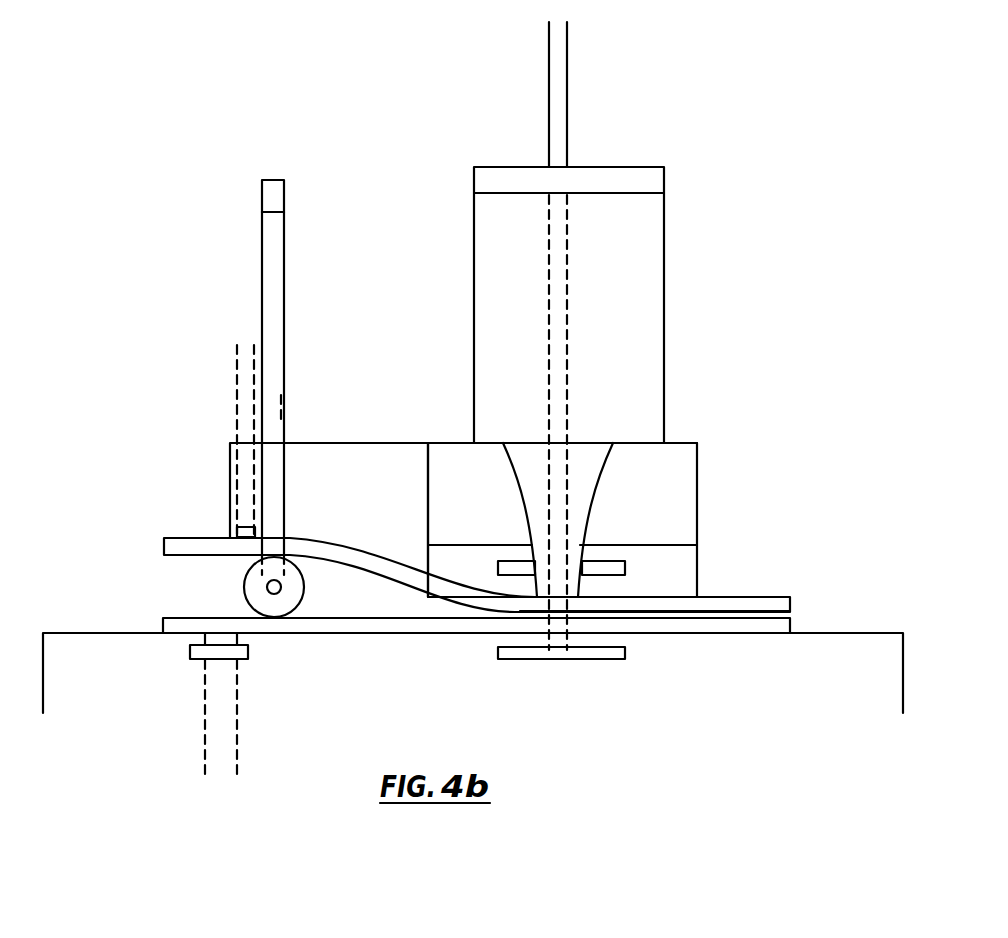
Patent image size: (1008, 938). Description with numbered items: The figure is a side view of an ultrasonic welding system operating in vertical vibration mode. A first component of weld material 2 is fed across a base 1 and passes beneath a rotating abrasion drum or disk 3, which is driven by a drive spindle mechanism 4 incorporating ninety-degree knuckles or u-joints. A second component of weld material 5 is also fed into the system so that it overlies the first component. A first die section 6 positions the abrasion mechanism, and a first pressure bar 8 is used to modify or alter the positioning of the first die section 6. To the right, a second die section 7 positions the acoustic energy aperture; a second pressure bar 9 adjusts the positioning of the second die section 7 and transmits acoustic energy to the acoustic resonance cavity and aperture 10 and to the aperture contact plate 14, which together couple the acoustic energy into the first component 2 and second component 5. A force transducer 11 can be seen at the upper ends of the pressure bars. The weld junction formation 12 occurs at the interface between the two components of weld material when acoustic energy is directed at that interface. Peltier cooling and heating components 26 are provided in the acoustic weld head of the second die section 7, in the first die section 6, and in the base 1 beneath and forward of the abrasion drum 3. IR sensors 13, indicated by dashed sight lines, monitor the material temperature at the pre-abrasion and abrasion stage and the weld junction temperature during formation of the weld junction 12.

The base 1 is at (437, 687).
The first component of weld material 2 is at (163, 625).
The rotating abrasion drum or disk 3 is at (246, 597).
The drive spindle mechanism 4 is at (263, 503).
The second component of weld material 5 is at (170, 547).
The first die section 6 is at (232, 465).
The second die section 7 is at (676, 487).
The first pressure bar 8 is at (268, 318).
The second pressure bar 9 is at (665, 270).
The acoustic resonance cavity and aperture 10 is at (565, 535).
The force transducer 11 is at (655, 185).
The weld junction formation 12 is at (560, 616).
The IR sensors 13 is at (247, 390).
The aperture contact plate 14 is at (451, 555).
The Peltier cooling and heating components 26 is at (232, 533).